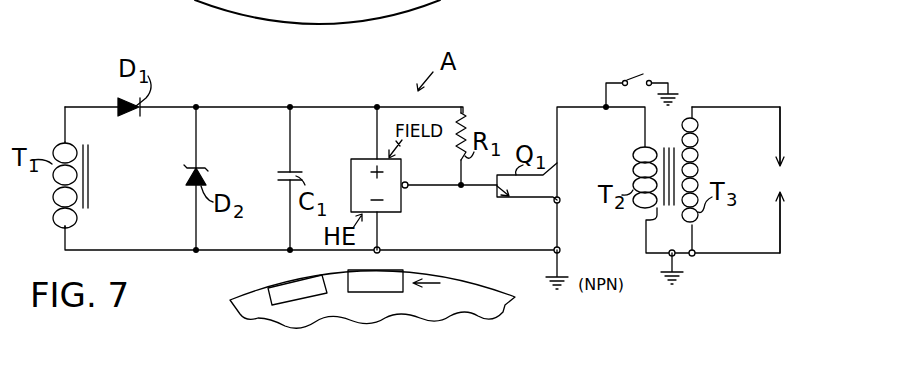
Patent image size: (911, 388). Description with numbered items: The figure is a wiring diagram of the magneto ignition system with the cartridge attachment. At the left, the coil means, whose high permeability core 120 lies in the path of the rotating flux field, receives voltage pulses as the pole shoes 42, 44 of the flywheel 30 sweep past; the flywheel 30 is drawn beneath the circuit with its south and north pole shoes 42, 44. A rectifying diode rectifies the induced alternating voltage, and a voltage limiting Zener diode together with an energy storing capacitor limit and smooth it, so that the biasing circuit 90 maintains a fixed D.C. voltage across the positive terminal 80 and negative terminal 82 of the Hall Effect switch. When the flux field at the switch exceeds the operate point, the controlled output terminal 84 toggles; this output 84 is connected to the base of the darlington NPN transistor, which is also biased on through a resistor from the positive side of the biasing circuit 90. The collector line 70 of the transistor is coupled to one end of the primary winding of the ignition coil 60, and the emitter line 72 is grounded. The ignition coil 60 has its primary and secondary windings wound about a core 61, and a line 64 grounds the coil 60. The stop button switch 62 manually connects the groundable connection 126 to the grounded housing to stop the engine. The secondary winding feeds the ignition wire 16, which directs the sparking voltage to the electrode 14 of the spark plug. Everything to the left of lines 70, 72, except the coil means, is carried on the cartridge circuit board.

The high permeability core 120 is at (94, 161).
The biasing circuit 90 is at (292, 103).
The positive terminal 80 is at (377, 158).
The controlled output terminal 84 is at (410, 182).
The negative terminal 82 is at (379, 216).
The collector line 70 is at (559, 152).
The emitter line 72 is at (566, 272).
The groundable connection 126 is at (605, 96).
The stop button switch 62 is at (641, 78).
The ignition coil 60 is at (690, 98).
The core 61 is at (699, 141).
The ignition wire 16 is at (783, 97).
The electrode 14 is at (785, 189).
The line 64 is at (680, 273).
The magnetic pole shoe 42 is at (300, 280).
The magnetic pole shoe 44 is at (390, 270).
The flywheel 30 is at (479, 281).